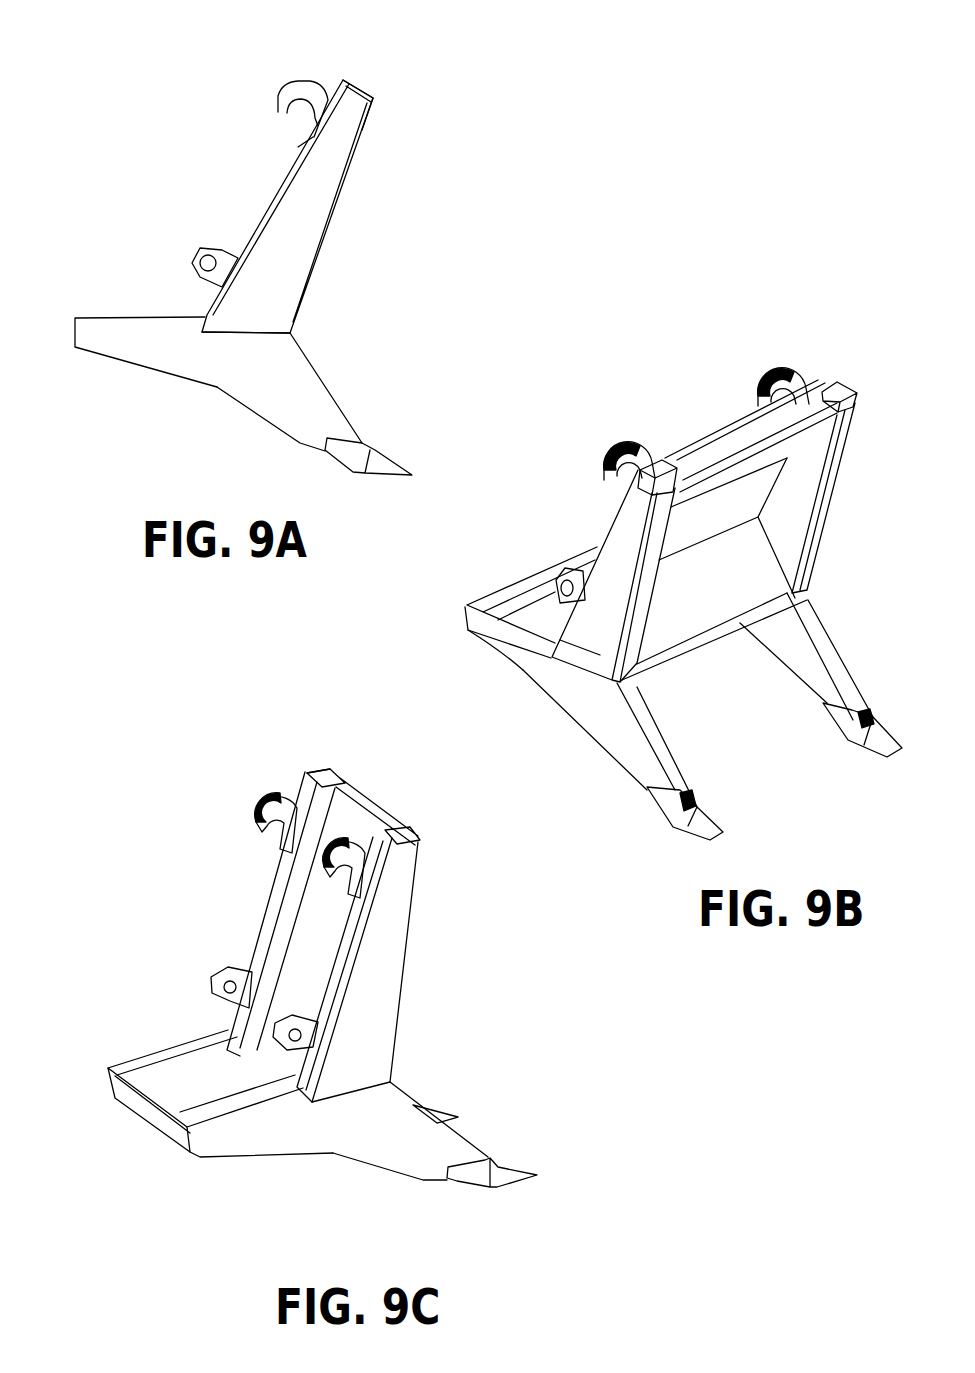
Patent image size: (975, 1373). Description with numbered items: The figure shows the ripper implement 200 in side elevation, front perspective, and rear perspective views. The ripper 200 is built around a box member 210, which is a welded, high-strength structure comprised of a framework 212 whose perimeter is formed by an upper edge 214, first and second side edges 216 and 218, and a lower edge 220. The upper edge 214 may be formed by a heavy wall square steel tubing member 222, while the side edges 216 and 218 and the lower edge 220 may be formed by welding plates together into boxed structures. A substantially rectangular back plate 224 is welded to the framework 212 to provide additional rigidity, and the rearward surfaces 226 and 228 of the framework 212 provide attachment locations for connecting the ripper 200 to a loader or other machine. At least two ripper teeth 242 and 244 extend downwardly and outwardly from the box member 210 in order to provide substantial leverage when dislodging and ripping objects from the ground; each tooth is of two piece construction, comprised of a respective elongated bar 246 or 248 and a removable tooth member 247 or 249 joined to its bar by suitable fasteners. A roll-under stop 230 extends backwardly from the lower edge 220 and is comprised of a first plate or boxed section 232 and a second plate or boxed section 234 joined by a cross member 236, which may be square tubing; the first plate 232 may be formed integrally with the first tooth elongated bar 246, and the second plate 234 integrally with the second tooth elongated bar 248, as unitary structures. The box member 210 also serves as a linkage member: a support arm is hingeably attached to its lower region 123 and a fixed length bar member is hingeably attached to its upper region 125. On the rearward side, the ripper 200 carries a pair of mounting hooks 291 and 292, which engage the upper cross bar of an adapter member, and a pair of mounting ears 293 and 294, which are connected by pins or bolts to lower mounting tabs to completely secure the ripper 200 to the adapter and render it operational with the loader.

In FIG. 9A, the ripper implement 200 is at (148, 135).
In FIG. 9B, the ripper implement 200 is at (718, 350).
In FIG. 9C, the ripper implement 200 is at (175, 878).
In FIG. 9A, the box member 210 is at (353, 257).
In FIG. 9B, the box member 210 is at (833, 572).
In FIG. 9C, the box member 210 is at (437, 982).
In FIG. 9A, the framework 212 is at (380, 105).
In FIG. 9B, the framework 212 is at (720, 435).
In FIG. 9C, the framework 212 is at (267, 885).
In FIG. 9A, the upper edge 214 is at (365, 82).
In FIG. 9B, the upper edge 214 is at (833, 390).
In FIG. 9C, the upper edge 214 is at (360, 803).
In FIG. 9A, the first side edge 216 is at (317, 202).
In FIG. 9B, the first side edge 216 is at (620, 558).
In FIG. 9C, the first side edge 216 is at (380, 1017).
In FIG. 9B, the second side edge 218 is at (823, 530).
In FIG. 9C, the second side edge 218 is at (257, 922).
In FIG. 9A, the lower edge 220 is at (290, 335).
In FIG. 9B, the lower edge 220 is at (667, 657).
In FIG. 9B, the heavy wall square steel tubing member 222 is at (780, 460).
In FIG. 9A, the back plate 224 is at (272, 200).
In FIG. 9B, the back plate 224 is at (727, 528).
In FIG. 9C, the back plate 224 is at (337, 970).
In FIG. 9C, the rearward surface 226 is at (342, 950).
In FIG. 9C, the rearward surface 228 is at (258, 948).
In FIG. 9A, the roll-under stop 230 is at (100, 387).
In FIG. 9B, the roll-under stop 230 is at (440, 615).
In FIG. 9C, the roll-under stop 230 is at (157, 1143).
In FIG. 9A, the first plate or boxed section 232 is at (108, 332).
In FIG. 9B, the first plate or boxed section 232 is at (515, 660).
In FIG. 9C, the first plate or boxed section 232 is at (227, 1142).
In FIG. 9C, the second plate or boxed section 234 is at (155, 1050).
In FIG. 9B, the cross member 236 is at (513, 585).
In FIG. 9C, the cross member 236 is at (135, 1105).
In FIG. 9A, the ripper tooth 242 is at (345, 415).
In FIG. 9B, the ripper tooth 242 is at (665, 770).
In FIG. 9C, the ripper tooth 242 is at (467, 1143).
In FIG. 9B, the ripper tooth 244 is at (842, 678).
In FIG. 9C, the ripper tooth 244 is at (458, 1115).
In FIG. 9A, the elongated bar 246 is at (290, 415).
In FIG. 9B, the elongated bar 246 is at (618, 758).
In FIG. 9C, the elongated bar 246 is at (393, 1158).
In FIG. 9A, the removable tooth member 247 is at (393, 462).
In FIG. 9B, the removable tooth member 247 is at (678, 827).
In FIG. 9C, the removable tooth member 247 is at (498, 1178).
In FIG. 9B, the elongated bar 248 is at (808, 693).
In FIG. 9B, the removable tooth member 249 is at (862, 745).
In FIG. 9B, the upper region 125 is at (620, 523).
In FIG. 9B, the lower region 123 is at (585, 612).
In FIG. 9C, the mounting hook 291 is at (345, 855).
In FIG. 9C, the mounting hook 292 is at (273, 808).
In FIG. 9C, the mounting ear 293 is at (280, 1025).
In FIG. 9C, the mounting ear 294 is at (218, 990).